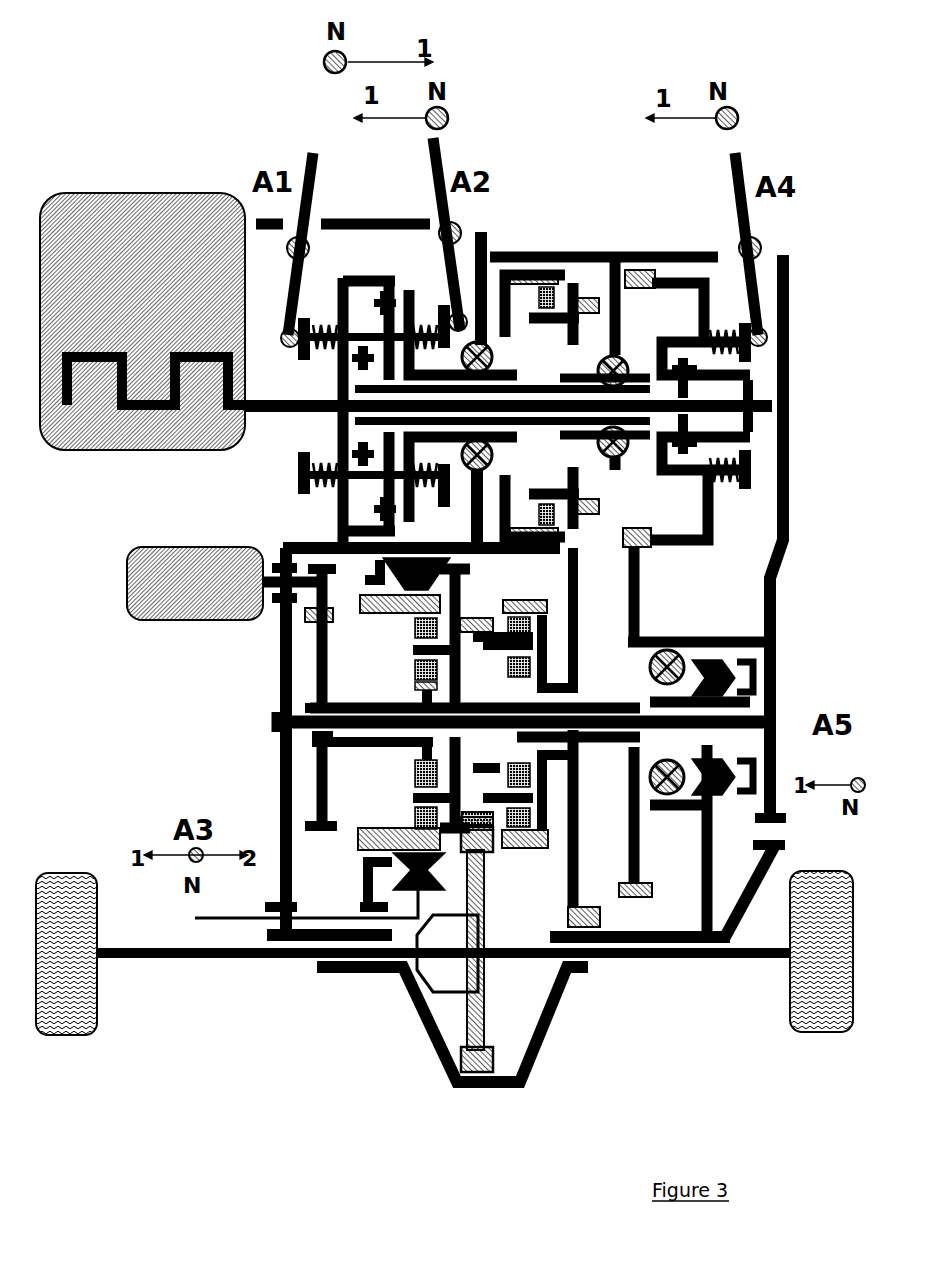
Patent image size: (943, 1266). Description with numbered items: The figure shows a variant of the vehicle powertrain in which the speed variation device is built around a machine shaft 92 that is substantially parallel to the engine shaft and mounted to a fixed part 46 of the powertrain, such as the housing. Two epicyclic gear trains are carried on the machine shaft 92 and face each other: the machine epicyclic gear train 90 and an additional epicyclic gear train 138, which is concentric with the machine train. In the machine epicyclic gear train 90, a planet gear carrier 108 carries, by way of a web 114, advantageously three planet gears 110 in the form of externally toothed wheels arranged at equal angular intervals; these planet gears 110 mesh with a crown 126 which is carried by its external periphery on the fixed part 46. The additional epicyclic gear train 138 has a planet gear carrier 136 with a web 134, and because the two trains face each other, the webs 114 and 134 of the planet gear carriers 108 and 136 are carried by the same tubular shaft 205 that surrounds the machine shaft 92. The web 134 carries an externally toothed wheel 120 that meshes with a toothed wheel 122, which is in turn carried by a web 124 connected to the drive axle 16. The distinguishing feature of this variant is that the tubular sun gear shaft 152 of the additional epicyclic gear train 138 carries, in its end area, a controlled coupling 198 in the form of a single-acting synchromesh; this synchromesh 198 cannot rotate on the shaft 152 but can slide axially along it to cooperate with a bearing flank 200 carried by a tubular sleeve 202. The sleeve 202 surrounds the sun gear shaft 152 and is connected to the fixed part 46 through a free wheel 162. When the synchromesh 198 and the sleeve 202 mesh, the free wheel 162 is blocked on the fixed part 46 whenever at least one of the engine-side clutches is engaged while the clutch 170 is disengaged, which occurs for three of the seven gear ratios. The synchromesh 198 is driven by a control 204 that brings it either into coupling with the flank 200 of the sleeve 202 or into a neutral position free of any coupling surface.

The drive axle 16 is at (227, 957).
The fixed part 46 is at (598, 237).
The machine epicyclic gear train 90 is at (380, 640).
The machine shaft 92 is at (306, 733).
The planet gear carrier 108 is at (405, 823).
The planet gears 110 is at (414, 658).
The web 114 is at (462, 612).
The externally toothed wheel 120 is at (505, 612).
The toothed wheel 122 is at (493, 1060).
The web 124 is at (467, 1017).
The crown 126 is at (376, 614).
The web 134 is at (416, 773).
The planet gear carrier 136 is at (530, 799).
The additional epicyclic gear train 138 is at (526, 855).
The tubular sun gear shaft 152 is at (588, 703).
The free wheel 162 is at (650, 648).
The clutch 170 is at (750, 367).
The controlled coupling 198 is at (756, 689).
The bearing flank 200 is at (699, 676).
The tubular sleeve 202 is at (698, 769).
The control 204 is at (739, 773).
The tubular shaft 205 is at (540, 715).